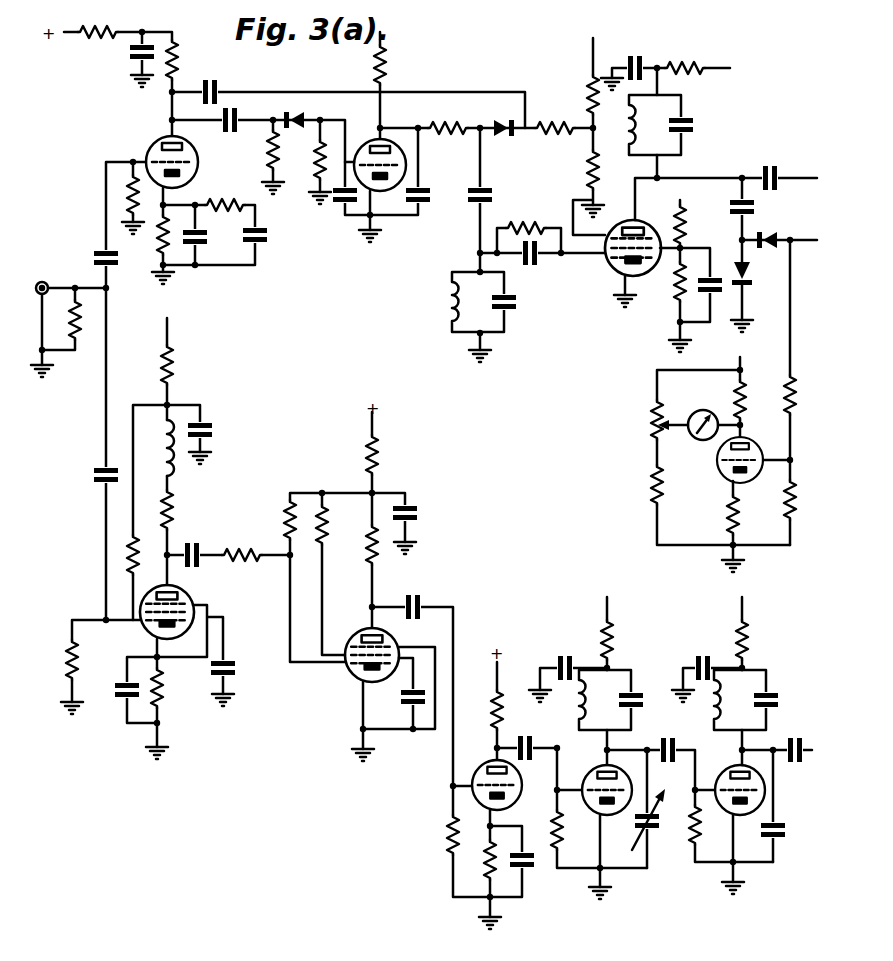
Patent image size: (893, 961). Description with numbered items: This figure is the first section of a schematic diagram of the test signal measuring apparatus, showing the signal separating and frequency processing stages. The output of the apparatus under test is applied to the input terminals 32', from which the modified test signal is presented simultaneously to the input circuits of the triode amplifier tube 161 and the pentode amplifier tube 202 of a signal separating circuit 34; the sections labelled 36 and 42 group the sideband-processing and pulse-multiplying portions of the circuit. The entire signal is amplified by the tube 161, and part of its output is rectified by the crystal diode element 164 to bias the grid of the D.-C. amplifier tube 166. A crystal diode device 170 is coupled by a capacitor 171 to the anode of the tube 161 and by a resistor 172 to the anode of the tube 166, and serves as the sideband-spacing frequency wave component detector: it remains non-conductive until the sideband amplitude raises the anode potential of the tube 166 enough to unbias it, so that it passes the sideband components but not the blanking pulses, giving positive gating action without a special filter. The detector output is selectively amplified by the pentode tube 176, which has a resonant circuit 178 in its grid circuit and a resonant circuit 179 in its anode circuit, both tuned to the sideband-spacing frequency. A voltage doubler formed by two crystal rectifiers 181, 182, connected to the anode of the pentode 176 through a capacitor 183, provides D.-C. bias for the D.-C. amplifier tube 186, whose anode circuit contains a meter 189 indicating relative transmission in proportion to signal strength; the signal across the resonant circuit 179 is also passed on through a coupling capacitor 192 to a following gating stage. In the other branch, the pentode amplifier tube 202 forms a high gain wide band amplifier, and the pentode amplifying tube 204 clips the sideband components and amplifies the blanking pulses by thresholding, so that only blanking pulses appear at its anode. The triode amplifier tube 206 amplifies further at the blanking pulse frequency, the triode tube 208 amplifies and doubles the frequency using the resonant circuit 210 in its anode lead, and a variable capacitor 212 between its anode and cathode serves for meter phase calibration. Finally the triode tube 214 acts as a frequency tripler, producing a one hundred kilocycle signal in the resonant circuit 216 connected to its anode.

The input terminals 32' is at (39, 268).
The signal separating circuit 34 is at (266, 463).
The detector stage 36 is at (506, 61).
The oscillator-mixer stage 42 is at (794, 641).
The triode amplifier tube 161 is at (199, 160).
The crystal diode element 164 is at (293, 108).
The D.-C. amplifier tube 166 is at (388, 122).
The crystal diode device 170 is at (512, 138).
The capacitor 171 is at (212, 84).
The resistor 172 is at (450, 140).
The pentode tube 176 is at (612, 272).
The resonant circuit 178 is at (498, 322).
The resonant circuit 179 is at (672, 108).
The crystal rectifier 181 is at (750, 278).
The crystal rectifier 182 is at (770, 238).
The capacitor 183 is at (728, 214).
The D.-C. amplifier tube 186 is at (724, 484).
The meter 189 is at (712, 404).
The coupling capacitor 192 is at (778, 158).
The pentode amplifier tube 202 is at (198, 596).
The pentode amplifying tube 204 is at (352, 690).
The triode amplifier tube 206 is at (470, 776).
The triode tube 208 is at (590, 782).
The resonant circuit 210 is at (622, 684).
The variable capacitor 212 is at (655, 838).
The triode tube 214 is at (726, 770).
The resonant circuit 216 is at (756, 686).